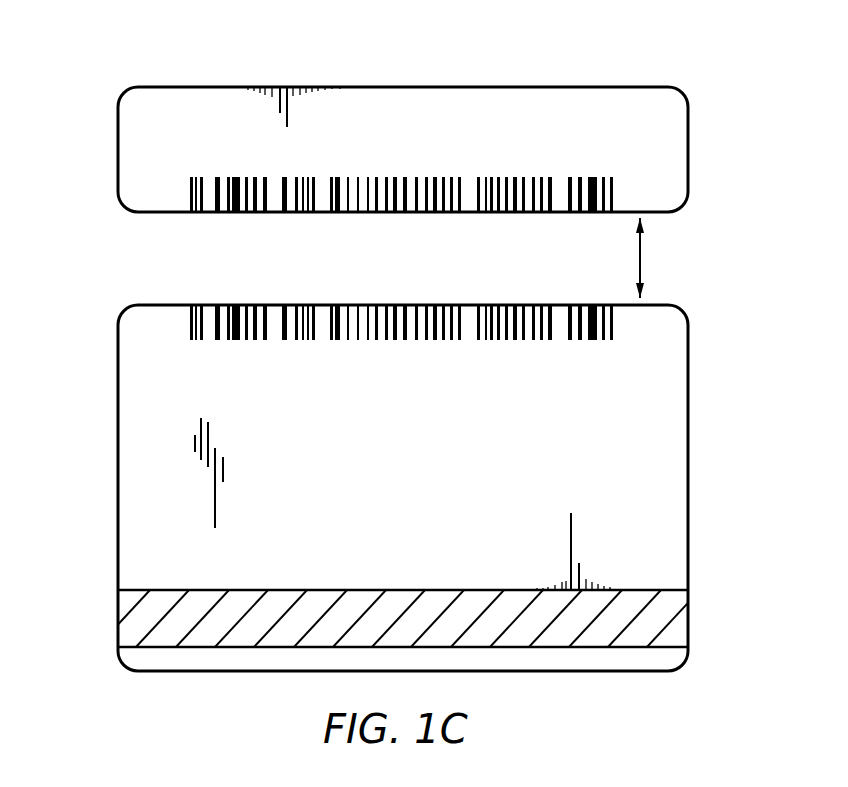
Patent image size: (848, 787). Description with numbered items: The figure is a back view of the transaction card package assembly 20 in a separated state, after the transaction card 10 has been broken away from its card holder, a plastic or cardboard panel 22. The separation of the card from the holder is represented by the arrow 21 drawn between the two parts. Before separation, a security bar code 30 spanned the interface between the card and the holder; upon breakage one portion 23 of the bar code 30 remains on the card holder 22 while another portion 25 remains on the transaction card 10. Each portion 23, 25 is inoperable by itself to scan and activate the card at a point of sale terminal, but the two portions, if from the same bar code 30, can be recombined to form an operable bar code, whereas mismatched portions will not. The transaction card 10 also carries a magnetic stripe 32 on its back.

The transaction card package assembly 20 is at (118, 30).
The card holder panel 22 is at (512, 108).
The portion of the security code on the card holder 23 is at (404, 177).
The arrow 21 is at (640, 258).
The transaction card 10 is at (688, 485).
The portion of the security code on the transaction card 25 is at (312, 338).
The bar code 30 is at (478, 338).
The magnetic stripe 32 is at (688, 625).